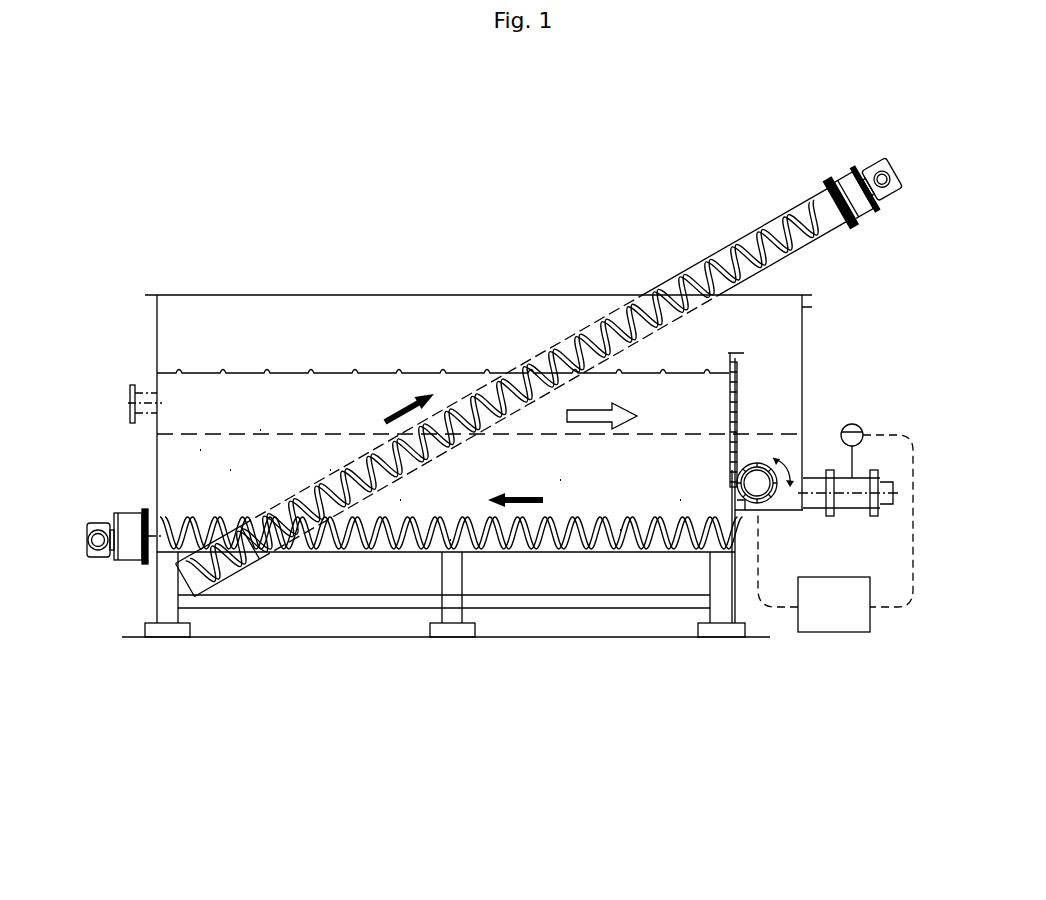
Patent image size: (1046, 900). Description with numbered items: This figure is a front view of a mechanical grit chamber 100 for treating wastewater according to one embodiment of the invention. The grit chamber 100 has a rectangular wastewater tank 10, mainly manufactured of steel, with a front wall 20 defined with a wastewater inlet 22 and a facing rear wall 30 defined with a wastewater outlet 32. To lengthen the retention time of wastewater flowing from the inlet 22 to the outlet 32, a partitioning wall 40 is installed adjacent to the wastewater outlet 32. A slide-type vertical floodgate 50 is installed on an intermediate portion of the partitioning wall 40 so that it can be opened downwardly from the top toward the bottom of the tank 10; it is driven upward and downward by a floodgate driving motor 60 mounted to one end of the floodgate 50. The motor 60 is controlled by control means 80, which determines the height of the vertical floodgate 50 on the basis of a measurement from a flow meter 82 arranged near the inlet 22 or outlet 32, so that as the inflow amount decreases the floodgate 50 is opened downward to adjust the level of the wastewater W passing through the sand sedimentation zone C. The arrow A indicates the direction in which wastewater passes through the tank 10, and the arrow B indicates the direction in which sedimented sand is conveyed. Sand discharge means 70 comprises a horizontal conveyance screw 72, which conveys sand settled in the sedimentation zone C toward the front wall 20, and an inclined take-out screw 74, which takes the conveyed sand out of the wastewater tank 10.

The grit chamber 100 is at (143, 178).
The wastewater tank 10 is at (155, 332).
The front wall 20 is at (157, 430).
The wastewater inlet 22 is at (130, 400).
The rear wall 30 is at (807, 307).
The wastewater outlet 32 is at (810, 502).
The partitioning wall 40 is at (740, 372).
The vertical floodgate 50 is at (742, 423).
The floodgate driving motor 60 is at (758, 480).
The sand discharge means 70 is at (497, 458).
The horizontal conveyance screw 72 is at (392, 555).
The take-out screw 74 is at (220, 572).
The control means 80 is at (823, 623).
The flow meter 82 is at (858, 430).
The water W is at (372, 373).
The sand sedimentation zone C is at (270, 405).
The arrow A is at (593, 425).
The arrow B is at (523, 505).